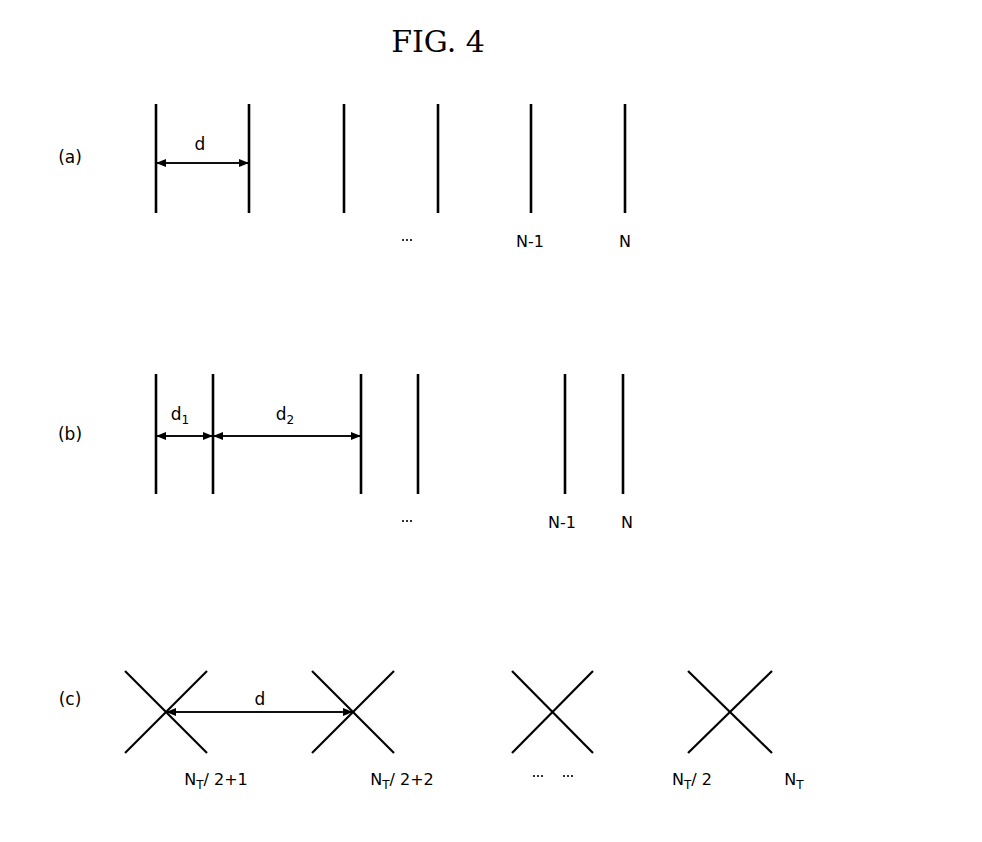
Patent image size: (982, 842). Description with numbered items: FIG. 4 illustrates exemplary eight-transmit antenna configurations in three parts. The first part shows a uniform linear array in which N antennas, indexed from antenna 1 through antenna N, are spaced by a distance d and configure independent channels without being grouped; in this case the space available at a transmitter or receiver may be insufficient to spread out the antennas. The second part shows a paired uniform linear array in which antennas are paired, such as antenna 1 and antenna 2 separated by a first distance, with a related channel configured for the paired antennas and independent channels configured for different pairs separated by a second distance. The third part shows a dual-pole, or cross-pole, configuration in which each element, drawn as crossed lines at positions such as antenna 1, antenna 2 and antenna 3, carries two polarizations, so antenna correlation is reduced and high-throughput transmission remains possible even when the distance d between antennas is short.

The first antenna element 1 is at (162, 446).
The second antenna element 2 is at (301, 446).
The third antenna element 3 is at (363, 313).